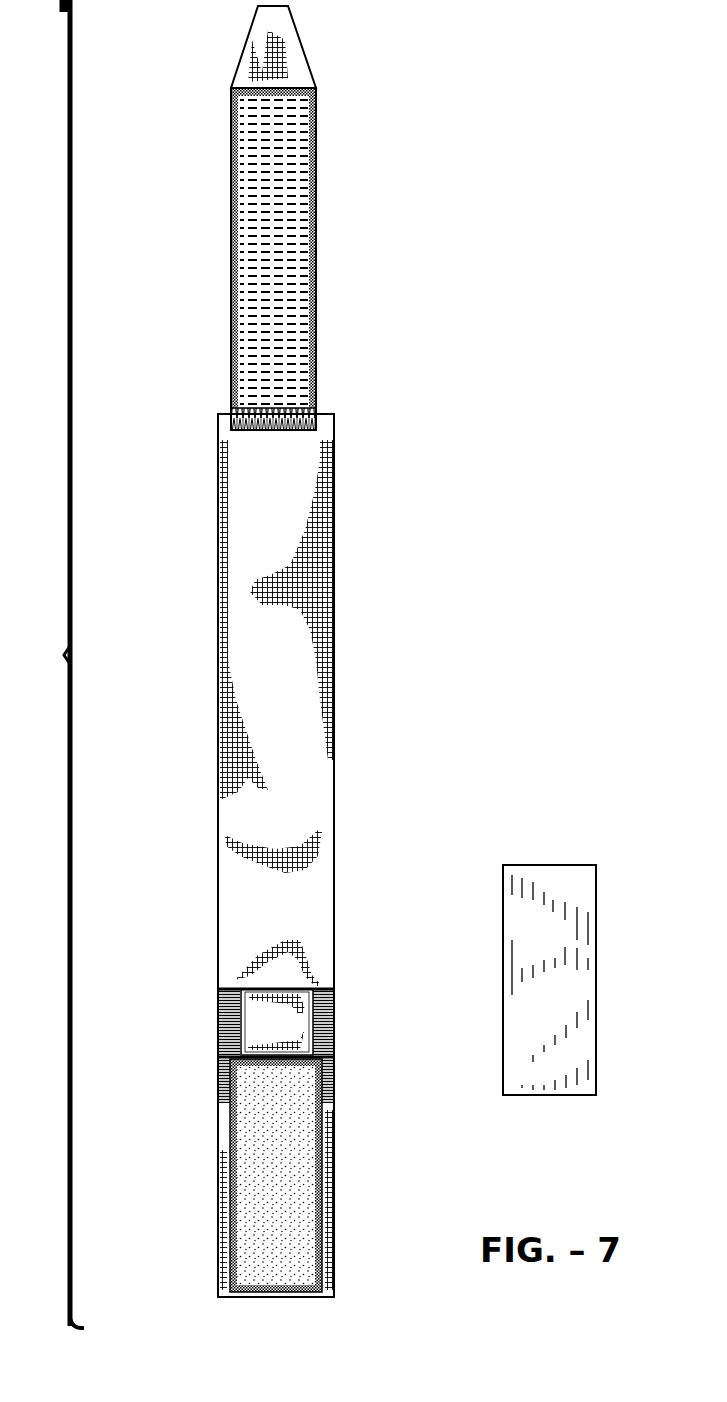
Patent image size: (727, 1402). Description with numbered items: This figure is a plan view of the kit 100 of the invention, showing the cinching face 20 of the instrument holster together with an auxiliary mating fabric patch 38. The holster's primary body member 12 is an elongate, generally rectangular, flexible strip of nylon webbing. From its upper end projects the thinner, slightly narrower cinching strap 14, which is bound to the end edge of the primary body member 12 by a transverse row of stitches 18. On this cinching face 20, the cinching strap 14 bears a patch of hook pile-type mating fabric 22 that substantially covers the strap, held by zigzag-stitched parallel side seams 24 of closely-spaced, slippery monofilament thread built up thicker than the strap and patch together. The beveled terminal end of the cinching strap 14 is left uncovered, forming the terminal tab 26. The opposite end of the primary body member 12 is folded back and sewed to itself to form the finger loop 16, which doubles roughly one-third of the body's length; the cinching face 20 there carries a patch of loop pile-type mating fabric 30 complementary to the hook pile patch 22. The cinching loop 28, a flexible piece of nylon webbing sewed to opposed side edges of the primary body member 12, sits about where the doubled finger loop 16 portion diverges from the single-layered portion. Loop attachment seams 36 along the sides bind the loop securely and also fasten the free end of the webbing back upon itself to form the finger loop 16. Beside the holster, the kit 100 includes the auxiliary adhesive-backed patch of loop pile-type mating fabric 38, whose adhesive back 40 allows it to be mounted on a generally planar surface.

The kit 100 is at (48, 664).
The primary body member 12 is at (283, 863).
The cinching strap 14 is at (269, 229).
The finger loop 16 is at (345, 1288).
The stitches 18 is at (240, 428).
The cinching face 20 is at (300, 826).
The hook pile-type mating fabric patch 22 is at (298, 170).
The side seams 24 is at (316, 262).
The terminal tab 26 is at (298, 62).
The cinching loop 28 is at (297, 996).
The loop pile-type mating fabric patch 30 is at (343, 1237).
The loop attachment seams 36 is at (218, 1028).
The auxiliary mating fabric patch 38 is at (574, 980).
The adhesive back 40 is at (512, 1038).